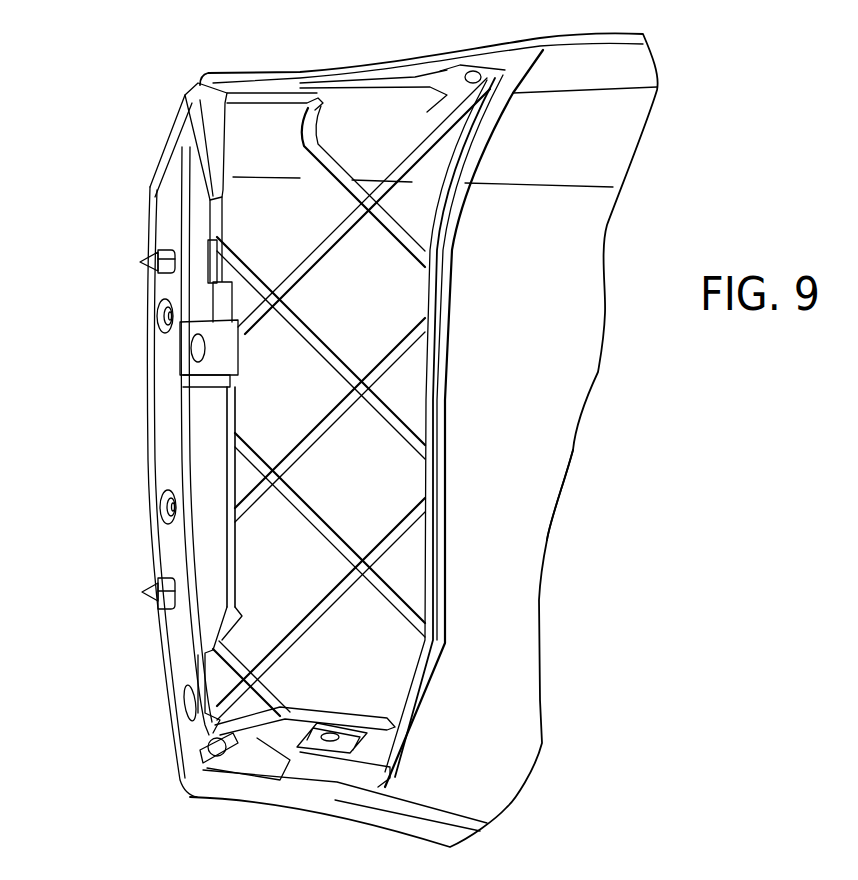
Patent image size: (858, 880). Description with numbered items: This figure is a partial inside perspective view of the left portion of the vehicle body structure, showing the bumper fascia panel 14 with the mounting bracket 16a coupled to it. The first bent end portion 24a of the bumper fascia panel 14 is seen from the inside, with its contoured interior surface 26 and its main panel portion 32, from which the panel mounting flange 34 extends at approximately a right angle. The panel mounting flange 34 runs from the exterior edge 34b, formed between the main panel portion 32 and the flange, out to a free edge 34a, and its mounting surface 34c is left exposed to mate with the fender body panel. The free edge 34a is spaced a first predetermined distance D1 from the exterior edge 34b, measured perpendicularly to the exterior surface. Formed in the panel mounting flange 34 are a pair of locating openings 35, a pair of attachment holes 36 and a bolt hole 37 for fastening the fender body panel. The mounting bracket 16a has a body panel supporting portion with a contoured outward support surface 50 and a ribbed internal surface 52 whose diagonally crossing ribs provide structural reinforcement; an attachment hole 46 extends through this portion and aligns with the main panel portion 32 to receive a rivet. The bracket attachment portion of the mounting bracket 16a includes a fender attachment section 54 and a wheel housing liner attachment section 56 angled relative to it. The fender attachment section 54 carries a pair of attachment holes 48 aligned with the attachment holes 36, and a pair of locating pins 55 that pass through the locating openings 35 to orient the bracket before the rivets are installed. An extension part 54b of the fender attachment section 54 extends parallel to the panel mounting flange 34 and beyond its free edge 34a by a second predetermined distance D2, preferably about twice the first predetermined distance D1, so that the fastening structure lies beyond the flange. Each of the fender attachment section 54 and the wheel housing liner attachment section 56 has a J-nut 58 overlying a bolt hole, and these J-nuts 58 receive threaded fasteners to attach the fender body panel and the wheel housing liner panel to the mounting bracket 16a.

The bumper fascia panel 14 is at (690, 70).
The mounting bracket 16a is at (455, 352).
The first bent end portion 24a is at (560, 538).
The contoured interior surface 26 is at (493, 657).
The main panel portion 32 is at (517, 453).
The panel mounting flange 34 is at (150, 409).
The free edge 34a is at (185, 430).
The exterior edge 34b is at (180, 755).
The mounting surface 34c is at (178, 662).
The locating openings 35 is at (170, 251).
The attachment holes 36 is at (157, 317).
The bolt hole 37 is at (184, 712).
The attachment hole 46 is at (483, 84).
The attachment holes 48 is at (172, 320).
The contoured outward support surface 50 is at (362, 320).
The ribbed internal surface 52 is at (405, 233).
The fender attachment section 54 is at (247, 582).
The extension part 54b is at (218, 262).
The locating pins 55 is at (150, 261).
The wheel housing liner attachment section 56 is at (368, 698).
The J-nut 58 is at (242, 352).
The first predetermined distance D1 is at (200, 531).
The second predetermined distance D2 is at (216, 441).